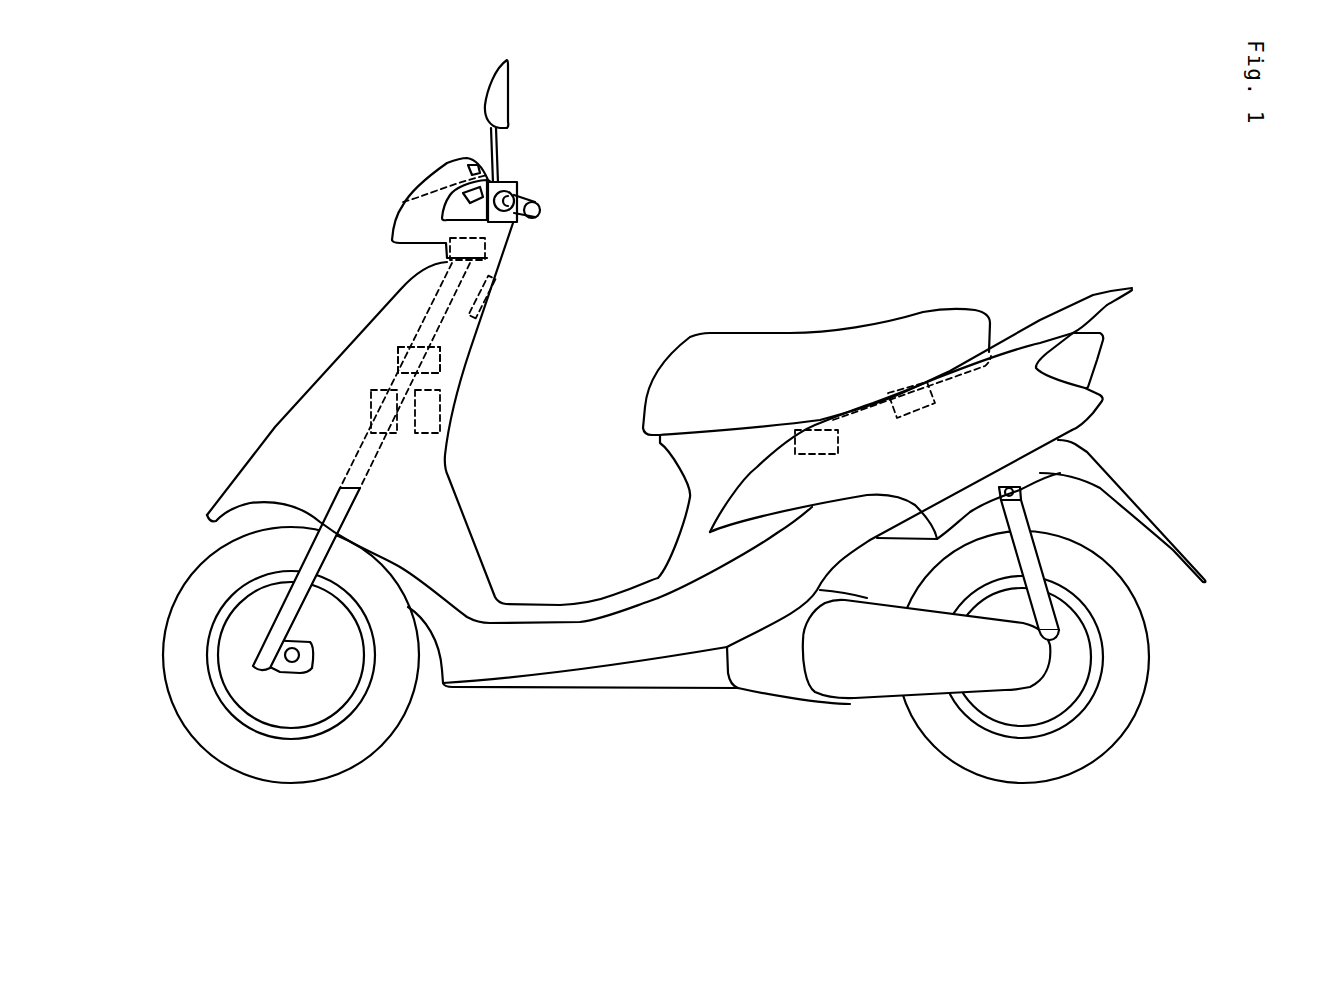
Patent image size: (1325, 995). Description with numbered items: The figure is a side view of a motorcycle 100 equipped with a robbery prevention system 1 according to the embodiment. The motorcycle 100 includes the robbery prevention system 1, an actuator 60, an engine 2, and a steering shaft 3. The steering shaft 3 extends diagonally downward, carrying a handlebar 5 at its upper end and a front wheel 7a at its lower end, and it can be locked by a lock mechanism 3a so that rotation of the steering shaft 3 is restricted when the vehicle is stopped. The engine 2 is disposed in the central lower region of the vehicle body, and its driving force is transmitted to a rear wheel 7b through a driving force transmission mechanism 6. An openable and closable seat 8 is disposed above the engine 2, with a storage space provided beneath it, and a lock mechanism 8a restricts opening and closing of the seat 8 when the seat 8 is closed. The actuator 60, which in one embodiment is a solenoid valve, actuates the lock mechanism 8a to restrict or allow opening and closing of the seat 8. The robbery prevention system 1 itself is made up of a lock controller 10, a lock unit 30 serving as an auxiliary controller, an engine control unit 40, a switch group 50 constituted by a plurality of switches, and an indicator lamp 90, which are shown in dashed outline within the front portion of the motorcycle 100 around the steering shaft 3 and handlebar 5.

The motorcycle 100 is at (695, 421).
The robbery prevention system 1 is at (340, 304).
The indicator lamp 90 is at (403, 202).
The switch group 50 is at (447, 283).
The lock unit (auxiliary controller) 30 is at (397, 358).
The lock controller 10 is at (398, 373).
The engine control unit (ECU) 40 is at (325, 406).
The steering shaft 3 is at (307, 550).
The lock mechanism 3a is at (487, 250).
The handlebar 5 is at (520, 188).
The front wheel 7a is at (407, 710).
The rear wheel 7b is at (1147, 633).
The seat 8 is at (753, 330).
The lock mechanism 8a is at (904, 388).
The actuator 60 is at (828, 428).
The engine 2 is at (778, 697).
The driving force transmission mechanism 6 is at (883, 700).